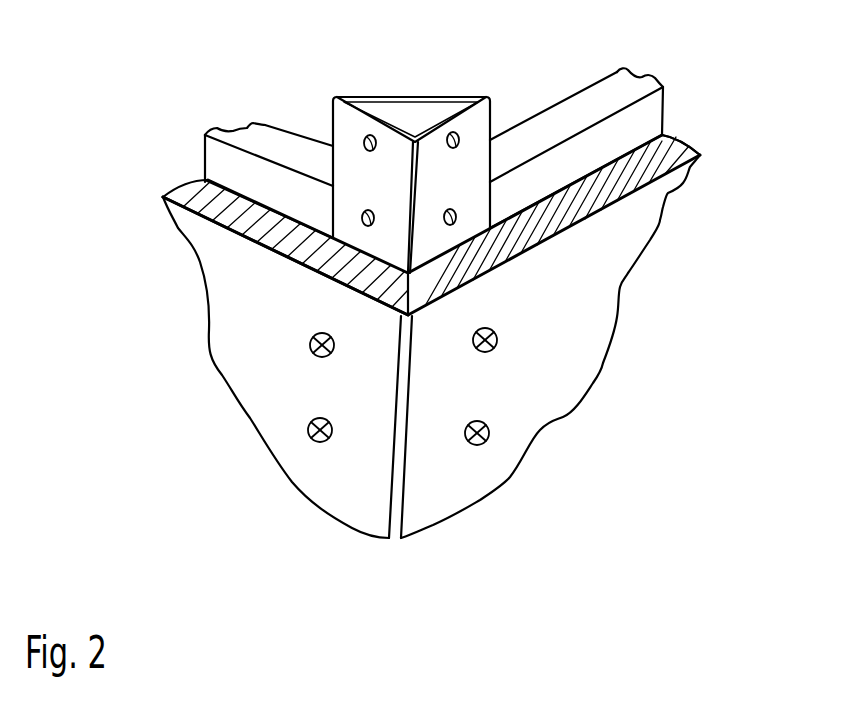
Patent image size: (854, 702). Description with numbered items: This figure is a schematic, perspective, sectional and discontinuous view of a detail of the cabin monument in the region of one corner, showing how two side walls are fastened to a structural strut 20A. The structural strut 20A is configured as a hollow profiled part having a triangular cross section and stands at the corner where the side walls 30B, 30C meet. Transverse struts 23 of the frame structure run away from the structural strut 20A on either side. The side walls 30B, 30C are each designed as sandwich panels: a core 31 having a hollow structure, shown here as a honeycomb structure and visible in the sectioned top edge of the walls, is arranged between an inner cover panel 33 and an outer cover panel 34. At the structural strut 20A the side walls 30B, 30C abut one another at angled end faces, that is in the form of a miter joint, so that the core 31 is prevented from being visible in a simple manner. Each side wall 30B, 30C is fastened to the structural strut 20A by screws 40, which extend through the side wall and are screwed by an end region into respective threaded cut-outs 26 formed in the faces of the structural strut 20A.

The structural strut 20A is at (436, 141).
The transverse strut 23 is at (278, 142).
The threaded cut-out 26 is at (462, 138).
The side wall 30B is at (322, 487).
The side wall 30C is at (570, 383).
The core 31 is at (238, 215).
The inner cover panel 33 is at (631, 146).
The outer cover panel 34 is at (558, 235).
The screw 40 is at (311, 338).